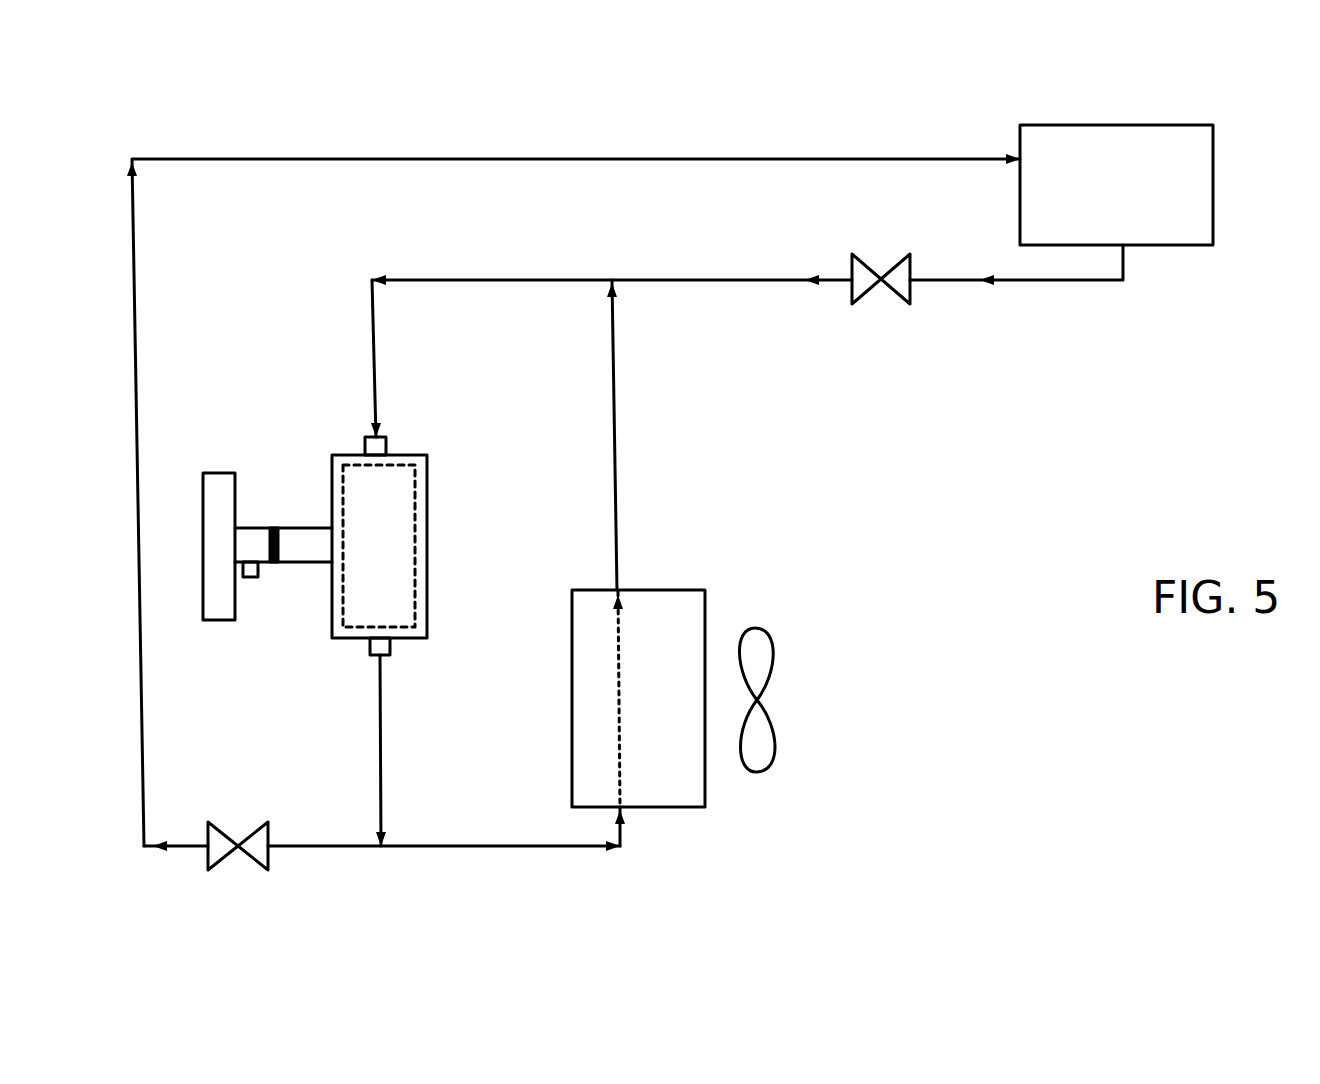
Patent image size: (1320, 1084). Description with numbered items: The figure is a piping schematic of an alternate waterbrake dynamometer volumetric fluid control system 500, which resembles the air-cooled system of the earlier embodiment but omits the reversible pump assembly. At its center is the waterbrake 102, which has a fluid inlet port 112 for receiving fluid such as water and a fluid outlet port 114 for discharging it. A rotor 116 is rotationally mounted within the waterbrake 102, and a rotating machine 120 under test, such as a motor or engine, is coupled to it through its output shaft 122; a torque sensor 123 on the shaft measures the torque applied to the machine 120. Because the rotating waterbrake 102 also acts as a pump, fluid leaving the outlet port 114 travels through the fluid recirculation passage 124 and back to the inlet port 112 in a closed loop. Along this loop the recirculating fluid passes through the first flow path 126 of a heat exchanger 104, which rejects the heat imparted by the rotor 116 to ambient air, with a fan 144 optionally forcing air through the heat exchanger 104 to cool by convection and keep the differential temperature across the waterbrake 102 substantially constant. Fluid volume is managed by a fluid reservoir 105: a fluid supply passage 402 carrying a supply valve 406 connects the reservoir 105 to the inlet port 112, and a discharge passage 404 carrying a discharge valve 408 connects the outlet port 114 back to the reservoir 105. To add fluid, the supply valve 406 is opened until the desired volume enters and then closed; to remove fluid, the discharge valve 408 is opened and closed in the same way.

The waterbrake dynamometer volumetric fluid control system 500 is at (460, 132).
The waterbrake fluid reservoir 105 is at (1033, 126).
The fluid supply passage 402 is at (717, 280).
The supply valve 406 is at (862, 296).
The fluid recirculation passage 124 is at (440, 318).
The fluid inlet port 112 is at (386, 445).
The waterbrake 102 is at (427, 497).
The rotor 116 is at (427, 572).
The fluid outlet port 114 is at (393, 655).
The rotating machine 120 is at (203, 482).
The output shaft 122 is at (255, 528).
The torque sensor 123 is at (255, 577).
The heat exchanger 104 is at (687, 590).
The first flow path 126 is at (620, 750).
The fan 144 is at (768, 713).
The discharge passage 404 is at (350, 846).
The discharge valve 408 is at (228, 868).